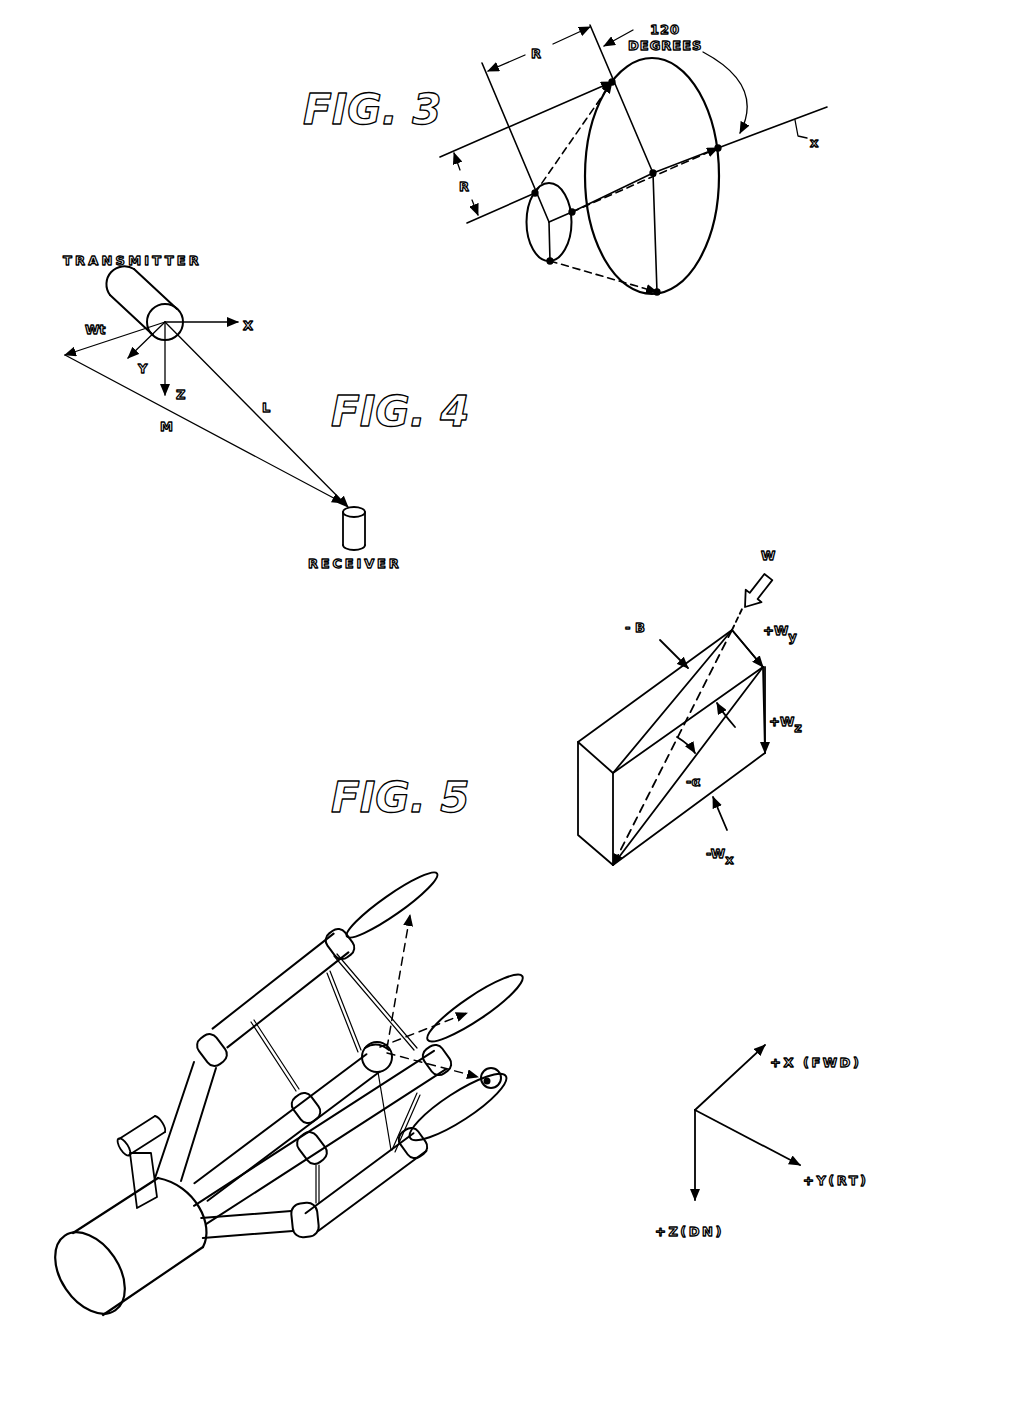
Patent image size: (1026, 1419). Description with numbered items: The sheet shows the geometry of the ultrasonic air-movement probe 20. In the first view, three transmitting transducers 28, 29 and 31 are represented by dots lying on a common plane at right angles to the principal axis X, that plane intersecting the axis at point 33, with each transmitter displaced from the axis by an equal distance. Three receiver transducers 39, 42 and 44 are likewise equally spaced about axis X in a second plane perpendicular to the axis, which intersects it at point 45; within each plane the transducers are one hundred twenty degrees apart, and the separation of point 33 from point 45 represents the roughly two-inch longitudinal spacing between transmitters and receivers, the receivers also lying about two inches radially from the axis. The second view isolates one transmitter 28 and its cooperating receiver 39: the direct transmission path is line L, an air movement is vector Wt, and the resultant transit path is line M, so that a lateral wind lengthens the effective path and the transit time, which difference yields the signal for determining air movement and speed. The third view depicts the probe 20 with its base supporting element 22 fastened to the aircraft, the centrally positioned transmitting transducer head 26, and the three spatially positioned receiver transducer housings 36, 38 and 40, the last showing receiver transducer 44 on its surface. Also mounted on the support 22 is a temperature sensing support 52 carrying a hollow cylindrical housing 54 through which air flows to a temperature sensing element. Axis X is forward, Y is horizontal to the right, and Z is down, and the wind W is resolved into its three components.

In FIG. 5, the probe 20 is at (305, 1091).
In FIG. 5, the base supporting element 22 is at (150, 1263).
In FIG. 5, the transmitting transducer head 26 is at (364, 1052).
In FIG. 3, the transmitting transducer 28 is at (535, 193).
In FIG. 4, the transmitting transducer 28 is at (170, 291).
In FIG. 3, the transmitting transducer 29 is at (550, 261).
In FIG. 3, the transmitting transducer 31 is at (572, 212).
In FIG. 3, the point of intersection of transmitter plane with axis X 33 is at (549, 221).
In FIG. 5, the receiver transducer housing 36 is at (396, 896).
In FIG. 5, the receiver transducer housing 38 is at (503, 1000).
In FIG. 3, the receiver transducer 39 is at (612, 82).
In FIG. 4, the receiver transducer 39 is at (367, 515).
In FIG. 5, the receiver transducer housing 40 is at (467, 1103).
In FIG. 3, the receiver transducer 42 is at (718, 146).
In FIG. 3, the receiver transducer 44 is at (657, 292).
In FIG. 5, the receiver transducer 44 is at (502, 1081).
In FIG. 3, the point of intersection of receiver plane with axis X 45 is at (653, 173).
In FIG. 5, the temperature sensing support 52 is at (140, 1175).
In FIG. 5, the hollow cylindrical housing 54 is at (145, 1133).